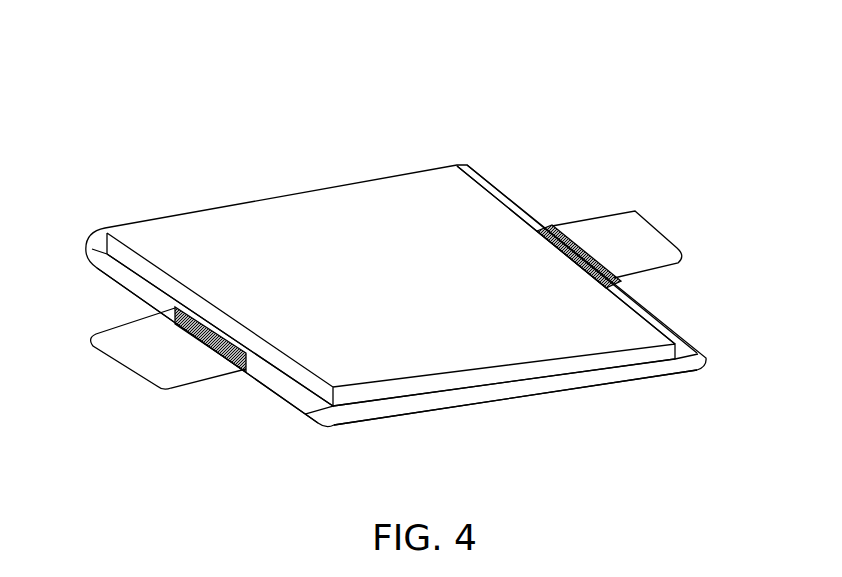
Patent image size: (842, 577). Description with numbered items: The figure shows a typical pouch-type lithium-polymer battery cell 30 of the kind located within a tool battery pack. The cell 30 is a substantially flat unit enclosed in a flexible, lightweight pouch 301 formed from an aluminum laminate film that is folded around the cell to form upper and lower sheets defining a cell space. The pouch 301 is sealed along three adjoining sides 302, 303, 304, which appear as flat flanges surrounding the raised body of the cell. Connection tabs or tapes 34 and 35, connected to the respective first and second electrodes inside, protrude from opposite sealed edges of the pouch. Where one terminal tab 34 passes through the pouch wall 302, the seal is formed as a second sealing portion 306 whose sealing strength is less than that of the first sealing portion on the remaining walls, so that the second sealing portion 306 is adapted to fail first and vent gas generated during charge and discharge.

The lithium-polymer battery cell 30 is at (388, 90).
The pouch 301 is at (290, 210).
The sealed side 302 is at (272, 375).
The sealed side 303 is at (467, 397).
The sealed side 304 is at (490, 186).
The second sealing portion 306 is at (173, 316).
The connection tab 34 is at (137, 357).
The connection tab 35 is at (623, 222).